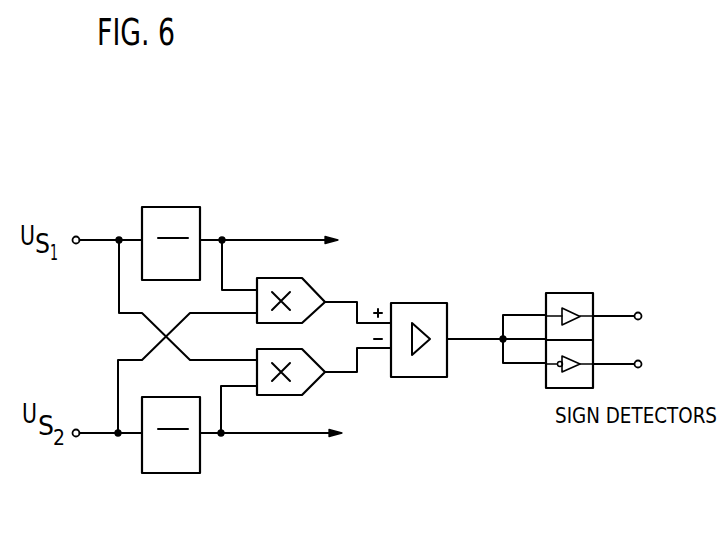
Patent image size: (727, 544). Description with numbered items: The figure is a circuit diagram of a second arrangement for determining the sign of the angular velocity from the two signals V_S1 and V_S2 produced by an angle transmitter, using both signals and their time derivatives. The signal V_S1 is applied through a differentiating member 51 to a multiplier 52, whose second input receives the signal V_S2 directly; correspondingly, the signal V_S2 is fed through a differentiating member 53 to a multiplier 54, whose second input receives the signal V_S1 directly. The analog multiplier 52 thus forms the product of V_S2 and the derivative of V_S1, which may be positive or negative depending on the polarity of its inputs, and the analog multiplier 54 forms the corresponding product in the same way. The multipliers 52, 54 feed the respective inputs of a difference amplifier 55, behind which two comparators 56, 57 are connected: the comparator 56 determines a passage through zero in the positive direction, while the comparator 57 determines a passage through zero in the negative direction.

The differentiating member 51 is at (196, 219).
The multiplier 52 is at (307, 290).
The differentiating member 53 is at (175, 467).
The multiplier 54 is at (305, 358).
The difference amplifier 55 is at (425, 367).
The comparator 56 is at (580, 302).
The comparator 57 is at (553, 378).